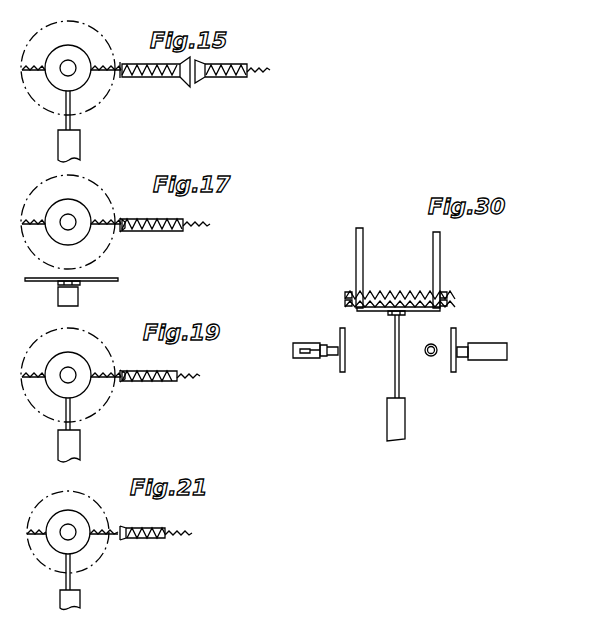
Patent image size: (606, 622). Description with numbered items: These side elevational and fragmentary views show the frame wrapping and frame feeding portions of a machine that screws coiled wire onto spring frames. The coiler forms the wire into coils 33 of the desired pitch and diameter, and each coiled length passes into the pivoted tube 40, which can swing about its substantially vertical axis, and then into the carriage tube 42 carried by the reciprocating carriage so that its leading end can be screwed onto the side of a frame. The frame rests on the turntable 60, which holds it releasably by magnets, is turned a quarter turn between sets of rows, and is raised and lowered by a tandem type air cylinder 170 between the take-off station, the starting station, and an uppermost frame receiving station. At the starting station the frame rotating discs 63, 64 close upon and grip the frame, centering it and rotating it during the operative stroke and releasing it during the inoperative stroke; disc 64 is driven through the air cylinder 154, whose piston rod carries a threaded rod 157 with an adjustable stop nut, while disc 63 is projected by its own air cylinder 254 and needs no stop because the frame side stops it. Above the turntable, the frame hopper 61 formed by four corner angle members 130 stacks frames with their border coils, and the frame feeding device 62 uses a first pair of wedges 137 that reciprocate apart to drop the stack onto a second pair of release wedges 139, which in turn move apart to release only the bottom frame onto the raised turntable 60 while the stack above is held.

In FIG. 15, the coil of wire 33 is at (270, 70).
In FIG. 17, the coil of wire 33 is at (207, 226).
In FIG. 19, the coil of wire 33 is at (200, 376).
In FIG. 21, the coil of wire 33 is at (189, 535).
In FIG. 15, the pivoted tube 40 is at (228, 78).
In FIG. 15, the carriage tube 42 is at (163, 78).
In FIG. 17, the carriage tube 42 is at (168, 232).
In FIG. 19, the carriage tube 42 is at (158, 382).
In FIG. 21, the carriage tube 42 is at (148, 540).
In FIG. 30, the carriage tube 42 is at (430, 356).
In FIG. 15, the turntable 60 is at (22, 72).
In FIG. 17, the turntable 60 is at (28, 281).
In FIG. 30, the turntable 60 is at (374, 312).
In FIG. 30, the frame hopper 61 is at (441, 270).
In FIG. 30, the frame feeding device 62 is at (449, 298).
In FIG. 15, the frame rotating disc 63 is at (60, 83).
In FIG. 17, the frame rotating disc 63 is at (60, 237).
In FIG. 19, the frame rotating disc 63 is at (60, 390).
In FIG. 21, the frame rotating disc 63 is at (60, 547).
In FIG. 30, the frame rotating disc 63 is at (342, 372).
In FIG. 30, the frame rotating disc 64 is at (455, 372).
In FIG. 30, the corner angle member 130 is at (364, 262).
In FIG. 30, the wedge 137 is at (349, 291).
In FIG. 30, the release wedge 139 is at (345, 304).
In FIG. 30, the air cylinder 154 is at (297, 358).
In FIG. 30, the threaded rod 157 is at (314, 338).
In FIG. 30, the tandem type air cylinder 170 is at (405, 427).
In FIG. 30, the air cylinder 254 is at (507, 351).